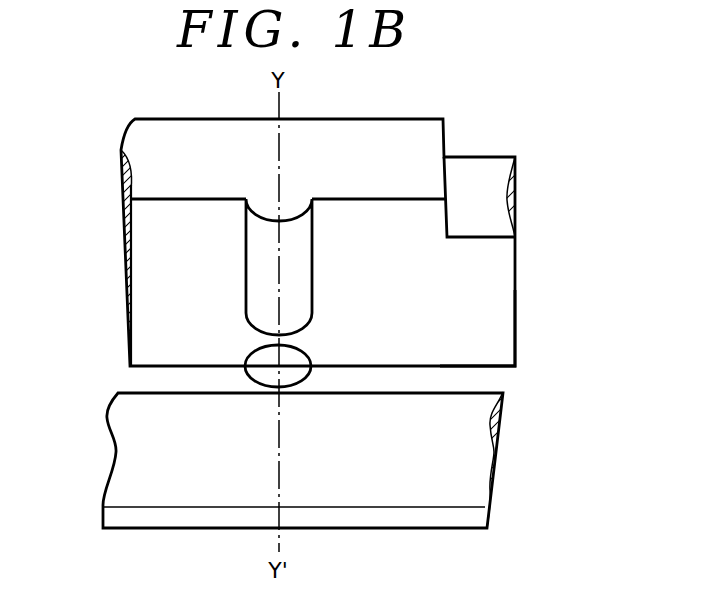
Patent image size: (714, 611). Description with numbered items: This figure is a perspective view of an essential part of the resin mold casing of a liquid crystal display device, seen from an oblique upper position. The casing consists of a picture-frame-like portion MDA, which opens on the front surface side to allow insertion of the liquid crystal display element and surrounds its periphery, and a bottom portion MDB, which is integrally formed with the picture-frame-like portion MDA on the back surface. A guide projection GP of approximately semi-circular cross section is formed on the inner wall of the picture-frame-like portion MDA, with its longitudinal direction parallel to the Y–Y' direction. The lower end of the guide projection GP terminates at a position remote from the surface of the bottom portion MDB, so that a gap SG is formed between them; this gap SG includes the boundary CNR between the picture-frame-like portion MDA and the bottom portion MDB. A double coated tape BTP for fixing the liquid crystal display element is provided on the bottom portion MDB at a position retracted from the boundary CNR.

The picture-frame-like portion MDA is at (396, 132).
The guide projection GP is at (300, 293).
The boundary CNR is at (438, 363).
The gap SG is at (247, 358).
The double coated tape BTP is at (447, 457).
The bottom portion MDB is at (347, 478).